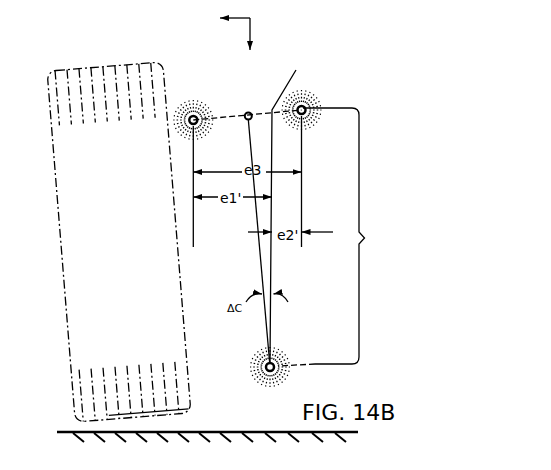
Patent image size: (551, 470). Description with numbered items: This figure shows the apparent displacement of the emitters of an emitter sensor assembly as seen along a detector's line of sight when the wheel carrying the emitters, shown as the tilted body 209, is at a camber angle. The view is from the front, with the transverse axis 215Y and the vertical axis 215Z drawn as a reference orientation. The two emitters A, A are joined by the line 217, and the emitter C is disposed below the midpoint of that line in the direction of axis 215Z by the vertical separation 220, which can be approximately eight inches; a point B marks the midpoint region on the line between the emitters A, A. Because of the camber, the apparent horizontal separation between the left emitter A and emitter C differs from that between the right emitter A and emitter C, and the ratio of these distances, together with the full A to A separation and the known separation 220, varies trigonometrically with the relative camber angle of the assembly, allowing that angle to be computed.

The tire 209 is at (58, 201).
The transverse coordinate axis 215Y is at (235, 20).
The vertical coordinate axis 215Z is at (251, 33).
The line 217 is at (290, 209).
The separation 220 is at (340, 237).
The emitter A is at (190, 114).
The point B is at (247, 113).
The emitter C is at (276, 362).